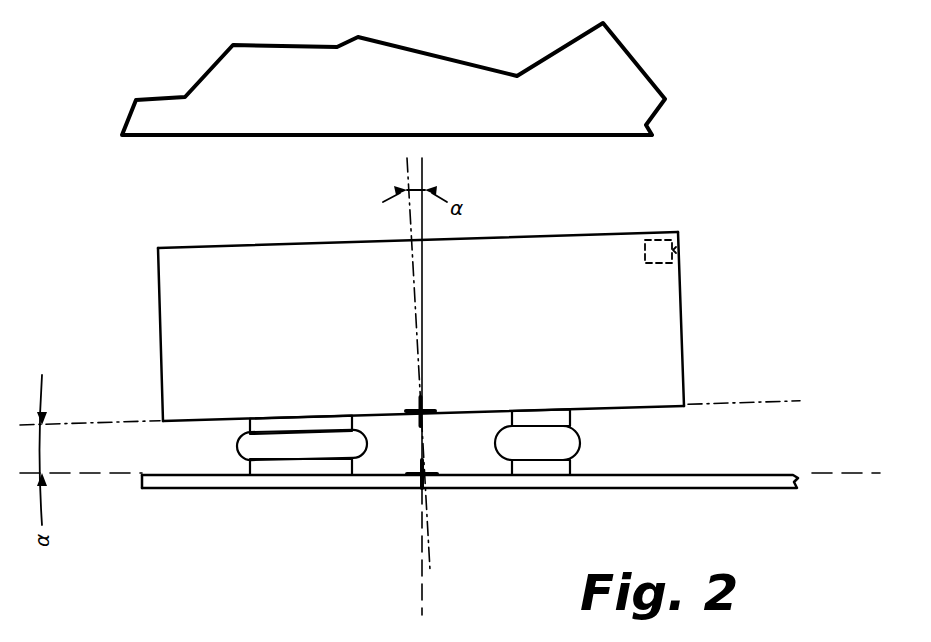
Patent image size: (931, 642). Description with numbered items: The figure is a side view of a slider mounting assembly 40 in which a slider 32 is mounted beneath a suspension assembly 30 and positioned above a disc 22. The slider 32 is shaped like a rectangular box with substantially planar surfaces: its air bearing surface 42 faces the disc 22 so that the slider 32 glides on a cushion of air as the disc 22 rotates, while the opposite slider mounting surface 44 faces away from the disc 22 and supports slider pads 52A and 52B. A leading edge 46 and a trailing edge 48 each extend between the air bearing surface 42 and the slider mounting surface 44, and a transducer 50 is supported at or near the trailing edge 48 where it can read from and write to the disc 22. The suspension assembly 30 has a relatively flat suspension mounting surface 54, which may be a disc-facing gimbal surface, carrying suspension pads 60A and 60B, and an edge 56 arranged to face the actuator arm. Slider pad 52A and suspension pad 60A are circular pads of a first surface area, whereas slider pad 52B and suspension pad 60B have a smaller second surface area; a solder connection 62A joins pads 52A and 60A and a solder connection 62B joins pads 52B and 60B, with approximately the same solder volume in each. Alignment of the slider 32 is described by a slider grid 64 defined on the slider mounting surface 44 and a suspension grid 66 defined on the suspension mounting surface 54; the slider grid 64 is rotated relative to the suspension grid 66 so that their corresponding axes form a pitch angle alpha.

The disc 22 is at (247, 140).
The suspension assembly 30 is at (664, 498).
The slider 32 is at (152, 349).
The slider mounting assembly 40 is at (557, 208).
The air bearing surface 42 is at (362, 238).
The slider mounting surface 44 is at (662, 408).
The leading edge 46 is at (162, 408).
The trailing edge 48 is at (683, 280).
The transducer 50 is at (695, 234).
The slider pad 52A is at (278, 425).
The slider pad 52B is at (530, 417).
The suspension mounting surface 54 is at (723, 475).
The edge 56 is at (142, 477).
The suspension pad 60A is at (318, 468).
The suspension pad 60B is at (537, 468).
The solder connection 62A is at (278, 444).
The solder connection 62B is at (568, 431).
The slider grid 64 is at (738, 402).
The suspension grid 66 is at (425, 165).